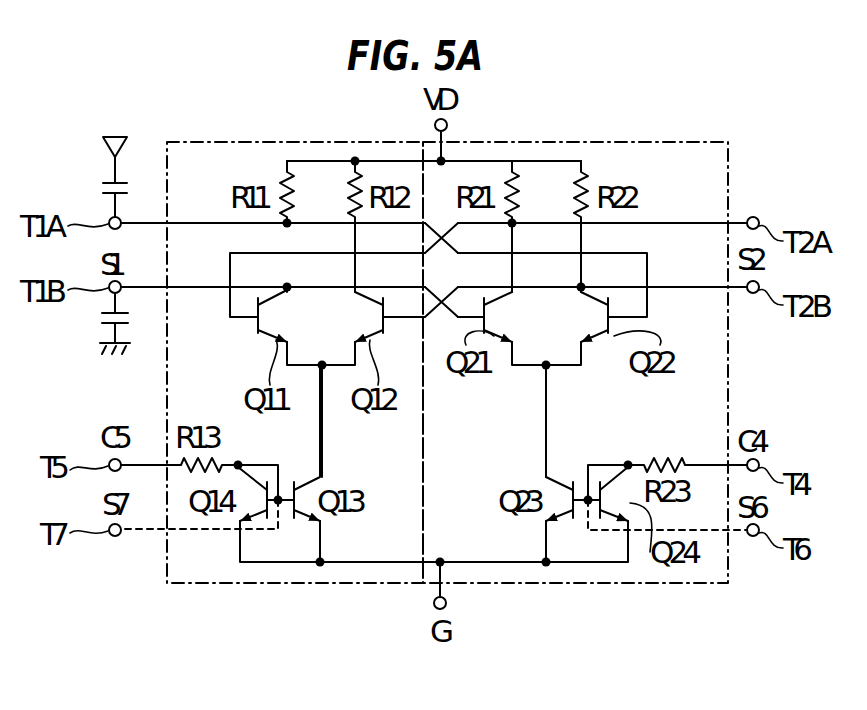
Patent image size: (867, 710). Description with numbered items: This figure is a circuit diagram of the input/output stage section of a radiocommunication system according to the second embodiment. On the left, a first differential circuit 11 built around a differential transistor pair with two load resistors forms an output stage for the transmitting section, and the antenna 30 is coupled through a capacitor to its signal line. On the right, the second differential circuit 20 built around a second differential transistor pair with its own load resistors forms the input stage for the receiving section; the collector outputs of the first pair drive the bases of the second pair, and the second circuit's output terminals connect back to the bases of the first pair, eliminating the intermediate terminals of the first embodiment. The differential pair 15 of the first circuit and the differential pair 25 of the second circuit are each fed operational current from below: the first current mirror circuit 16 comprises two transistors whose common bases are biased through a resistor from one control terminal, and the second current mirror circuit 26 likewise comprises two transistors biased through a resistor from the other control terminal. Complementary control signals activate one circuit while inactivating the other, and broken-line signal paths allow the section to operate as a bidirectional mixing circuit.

The antenna 30 is at (104, 150).
The first amplifier circuit block 11 is at (210, 142).
The second differential circuit 20 is at (668, 142).
The first differential transistor pair 15 is at (228, 337).
The second differential transistor pair 25 is at (705, 369).
The first current mirror circuit 16 is at (229, 563).
The second current mirror circuit 26 is at (608, 566).